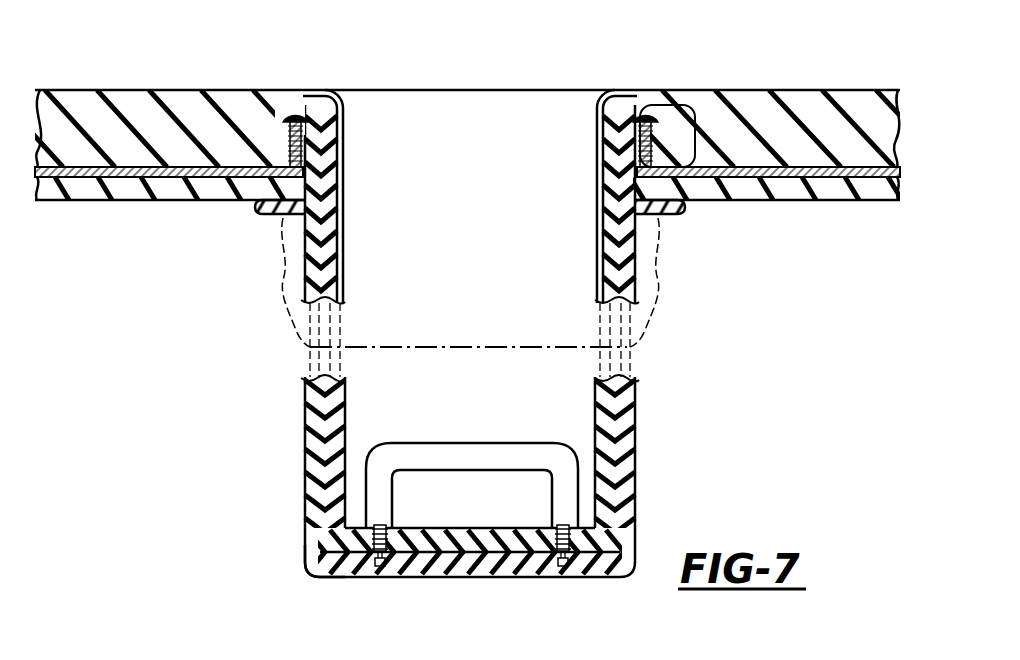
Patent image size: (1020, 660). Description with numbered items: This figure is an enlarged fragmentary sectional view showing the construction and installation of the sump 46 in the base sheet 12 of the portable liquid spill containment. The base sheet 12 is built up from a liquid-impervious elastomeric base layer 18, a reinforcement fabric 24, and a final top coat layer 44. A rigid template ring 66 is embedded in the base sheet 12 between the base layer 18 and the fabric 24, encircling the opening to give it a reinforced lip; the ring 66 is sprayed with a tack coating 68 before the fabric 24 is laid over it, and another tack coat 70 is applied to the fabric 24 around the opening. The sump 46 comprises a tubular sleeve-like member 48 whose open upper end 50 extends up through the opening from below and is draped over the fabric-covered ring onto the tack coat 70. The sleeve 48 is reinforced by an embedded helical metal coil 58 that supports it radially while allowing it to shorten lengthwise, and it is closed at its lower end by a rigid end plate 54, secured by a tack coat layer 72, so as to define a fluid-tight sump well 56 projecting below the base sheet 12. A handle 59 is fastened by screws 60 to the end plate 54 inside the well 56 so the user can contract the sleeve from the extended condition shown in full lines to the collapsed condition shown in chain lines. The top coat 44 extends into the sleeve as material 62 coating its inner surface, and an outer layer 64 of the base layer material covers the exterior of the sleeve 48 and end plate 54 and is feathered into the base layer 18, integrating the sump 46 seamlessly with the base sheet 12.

The base sheet 12 is at (805, 201).
The base layer 18 is at (890, 202).
The fabric 24 is at (870, 155).
The top coat layer 44 is at (802, 97).
The sump 46 is at (303, 448).
The tubular sleeve-like member 48 is at (640, 470).
The open upper end 50 is at (318, 96).
The end plate 54 is at (450, 561).
The sump well 56 is at (462, 259).
The helical metal coil 58 is at (640, 405).
The handle 59 is at (445, 455).
The screws 60 is at (380, 568).
The top coat material inside sleeve 62 is at (343, 163).
The outer layer 64 is at (305, 410).
The template ring 66 is at (345, 141).
The tack coating 68 is at (257, 205).
The tack coat 70 is at (288, 108).
The tack coat layer 72 is at (337, 575).